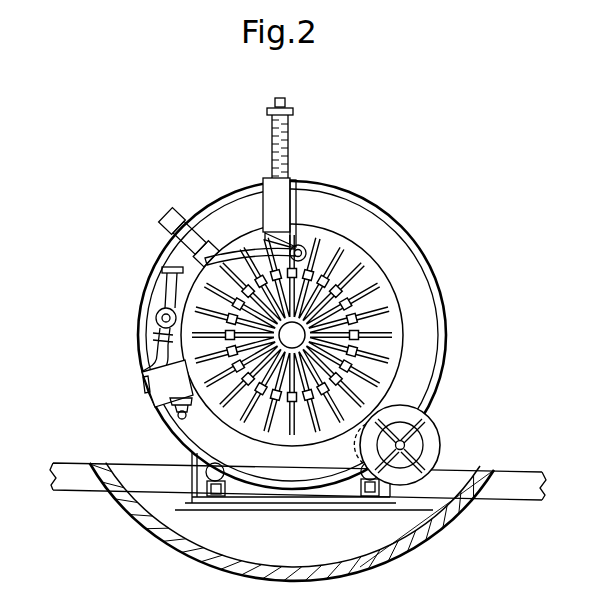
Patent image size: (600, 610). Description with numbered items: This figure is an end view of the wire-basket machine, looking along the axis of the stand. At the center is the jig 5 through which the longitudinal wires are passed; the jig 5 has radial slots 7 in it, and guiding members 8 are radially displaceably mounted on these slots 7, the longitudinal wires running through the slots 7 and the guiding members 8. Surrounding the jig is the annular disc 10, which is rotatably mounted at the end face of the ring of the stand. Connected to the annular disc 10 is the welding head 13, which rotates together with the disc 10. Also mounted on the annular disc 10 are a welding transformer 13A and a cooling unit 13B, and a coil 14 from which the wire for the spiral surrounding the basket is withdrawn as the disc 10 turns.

The jig 5 is at (326, 310).
The radial slots 7 is at (382, 282).
The guiding members 8 is at (400, 317).
The annular disc 10 is at (385, 243).
The welding head 13 is at (286, 197).
The welding transformer 13A is at (170, 212).
The cooling unit 13B is at (160, 398).
The coil 14 is at (432, 443).